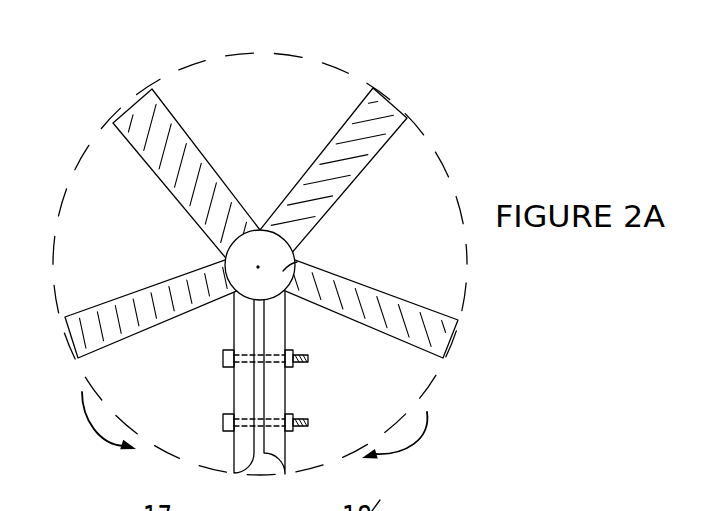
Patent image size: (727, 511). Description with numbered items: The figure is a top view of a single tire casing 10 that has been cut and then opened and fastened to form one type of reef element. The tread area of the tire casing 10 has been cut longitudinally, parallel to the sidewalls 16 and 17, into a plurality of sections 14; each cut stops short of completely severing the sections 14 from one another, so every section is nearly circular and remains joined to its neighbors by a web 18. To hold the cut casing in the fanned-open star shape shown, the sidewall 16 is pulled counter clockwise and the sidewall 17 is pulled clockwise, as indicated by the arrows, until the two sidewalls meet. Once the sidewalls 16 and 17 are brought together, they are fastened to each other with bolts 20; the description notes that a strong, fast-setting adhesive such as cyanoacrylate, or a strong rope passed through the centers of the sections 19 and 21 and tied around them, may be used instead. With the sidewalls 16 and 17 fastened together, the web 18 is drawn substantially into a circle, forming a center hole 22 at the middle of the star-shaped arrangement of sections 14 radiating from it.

The tire casing 10 is at (178, 62).
The sections 14 is at (395, 102).
The sidewall 16 is at (230, 473).
The sidewall 17 is at (282, 474).
The web 18 is at (228, 272).
The section 19 is at (227, 460).
The bolts 20 is at (223, 356).
The section 21 is at (300, 473).
The center hole 22 is at (298, 262).